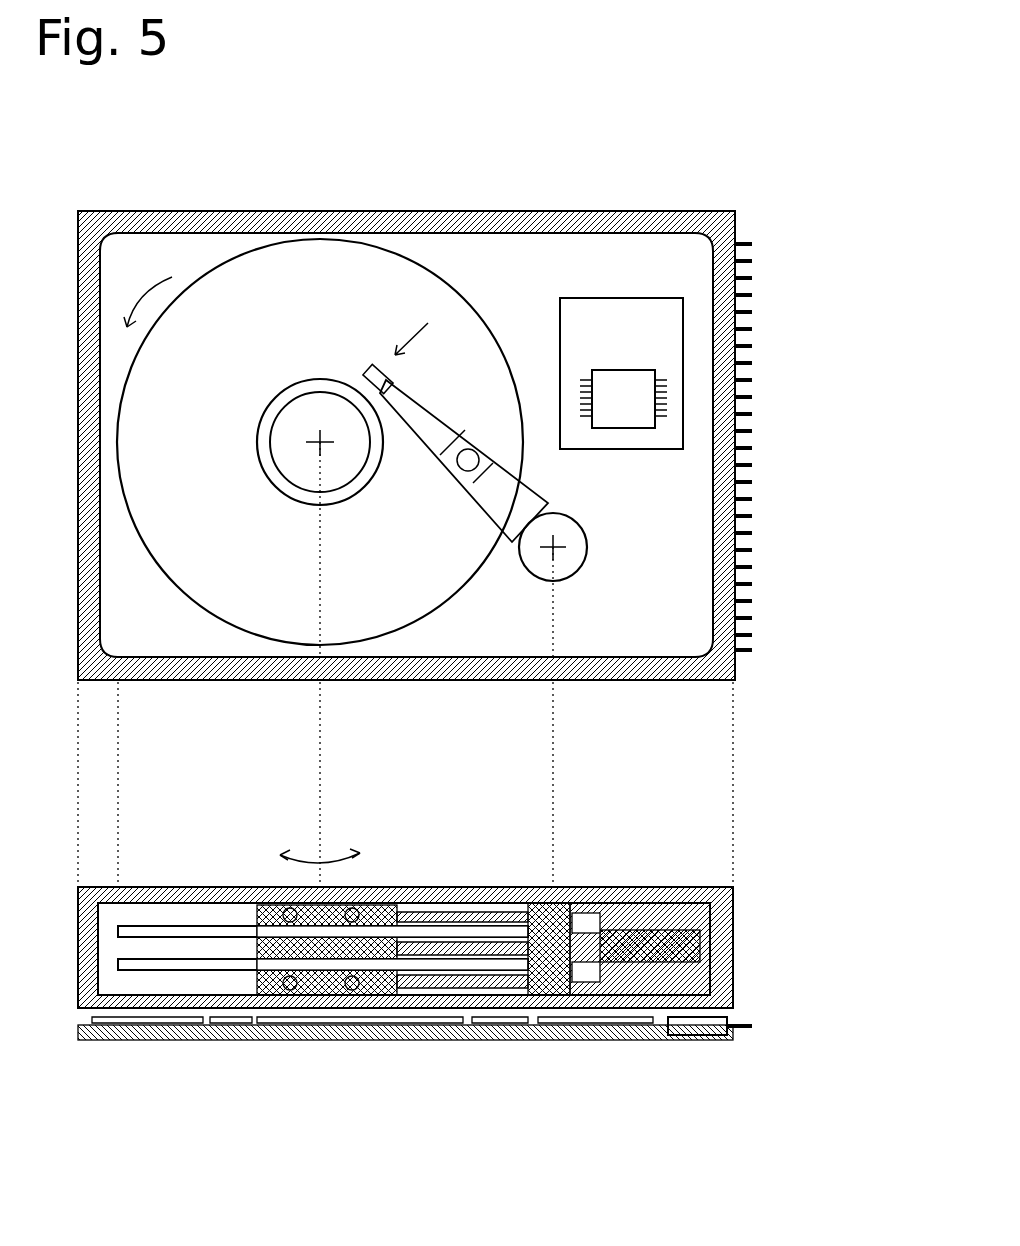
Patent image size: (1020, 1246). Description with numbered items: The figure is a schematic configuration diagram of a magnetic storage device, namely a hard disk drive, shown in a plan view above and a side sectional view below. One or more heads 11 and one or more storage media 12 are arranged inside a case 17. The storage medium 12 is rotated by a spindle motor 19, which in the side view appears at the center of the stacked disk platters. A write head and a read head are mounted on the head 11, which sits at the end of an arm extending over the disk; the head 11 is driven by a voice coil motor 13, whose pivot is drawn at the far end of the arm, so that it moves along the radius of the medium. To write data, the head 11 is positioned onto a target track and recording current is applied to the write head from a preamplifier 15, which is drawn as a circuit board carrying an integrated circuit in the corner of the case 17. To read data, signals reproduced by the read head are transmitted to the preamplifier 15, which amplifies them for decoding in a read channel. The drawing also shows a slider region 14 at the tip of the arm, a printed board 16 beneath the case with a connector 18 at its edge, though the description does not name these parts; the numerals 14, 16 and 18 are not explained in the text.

The head 11 is at (376, 370).
The storage medium 12 is at (287, 268).
The voice coil motor 13 is at (575, 578).
The head 14 is at (420, 410).
The preamplifier 15 is at (637, 367).
The printed circuit board 16 is at (345, 1040).
The case 17 is at (545, 211).
The connector 18 is at (698, 1040).
The spindle motor 19 is at (283, 960).